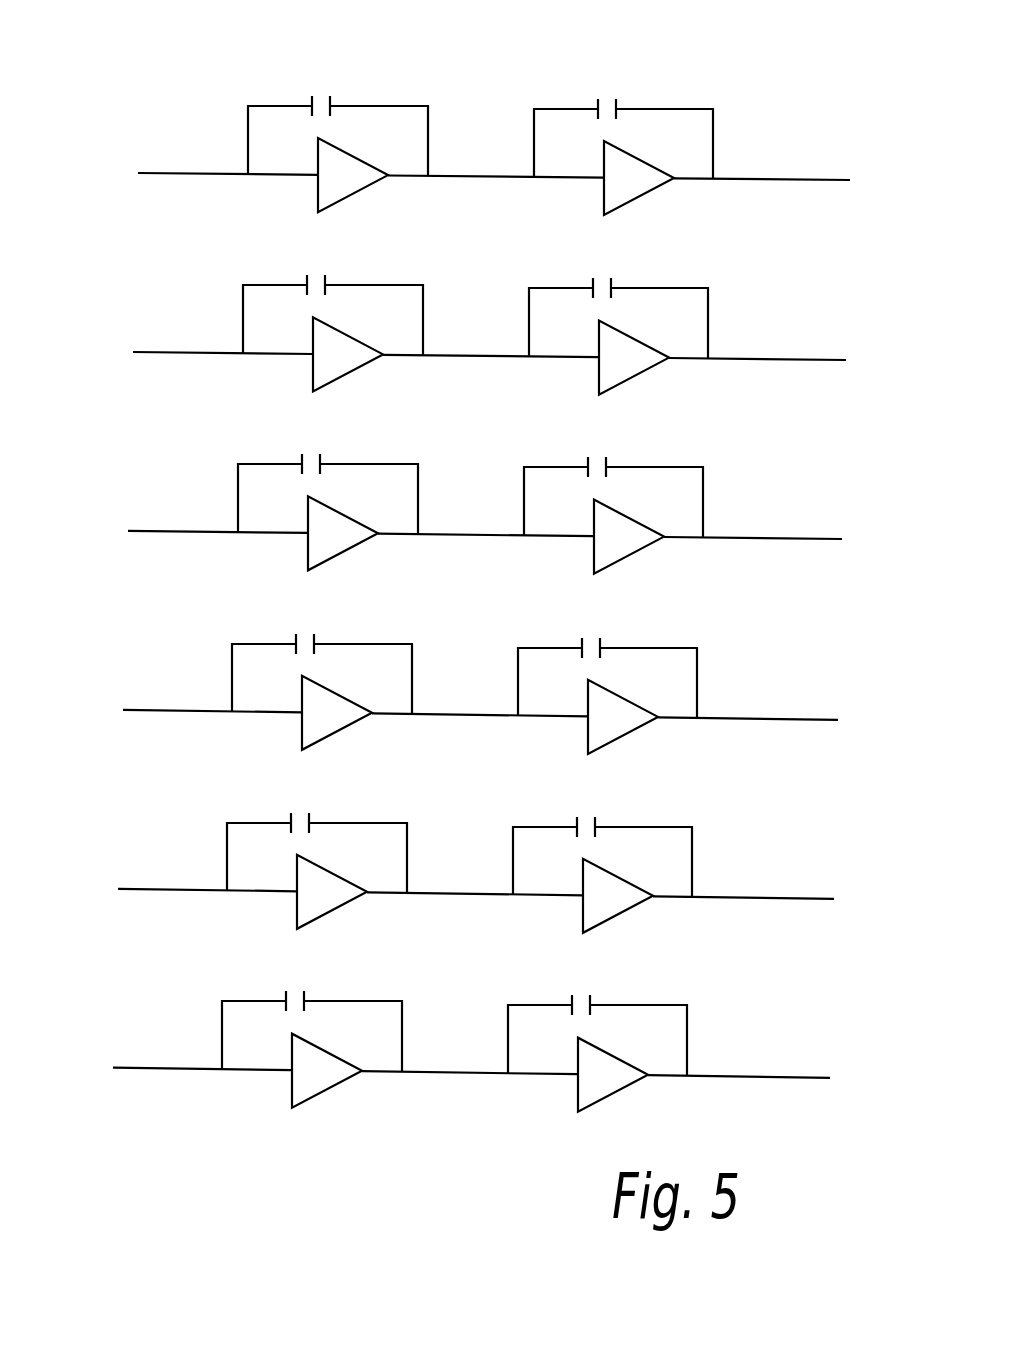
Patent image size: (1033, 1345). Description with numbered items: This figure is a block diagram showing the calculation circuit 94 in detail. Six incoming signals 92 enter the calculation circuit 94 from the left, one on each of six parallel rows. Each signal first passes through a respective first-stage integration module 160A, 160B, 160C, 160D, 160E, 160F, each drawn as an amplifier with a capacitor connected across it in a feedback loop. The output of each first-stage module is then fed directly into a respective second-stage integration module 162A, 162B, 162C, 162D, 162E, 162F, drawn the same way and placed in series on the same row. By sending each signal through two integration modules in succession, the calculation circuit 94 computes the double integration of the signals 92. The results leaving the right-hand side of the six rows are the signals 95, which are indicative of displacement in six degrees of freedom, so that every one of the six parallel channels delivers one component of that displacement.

The signals 92 is at (191, 127).
The calculation circuit 94 is at (356, 572).
The signals indicative of displacement 95 is at (623, 592).
The integration module 160A is at (357, 193).
The integration module 160B is at (348, 370).
The integration module 160C is at (338, 555).
The integration module 160D is at (333, 733).
The integration module 160E is at (332, 908).
The integration module 160F is at (317, 1093).
The integration module 162A is at (643, 197).
The integration module 162B is at (635, 372).
The integration module 162C is at (625, 560).
The integration module 162D is at (610, 738).
The integration module 162E is at (602, 928).
The integration module 162F is at (603, 1102).